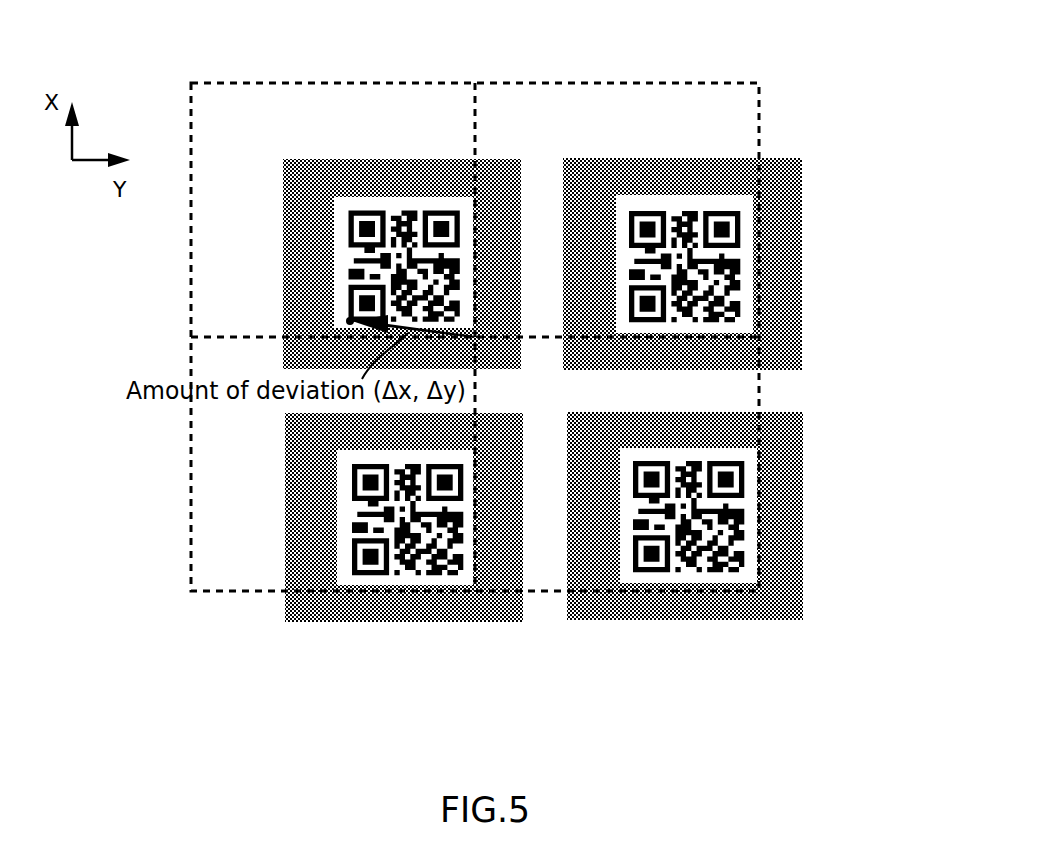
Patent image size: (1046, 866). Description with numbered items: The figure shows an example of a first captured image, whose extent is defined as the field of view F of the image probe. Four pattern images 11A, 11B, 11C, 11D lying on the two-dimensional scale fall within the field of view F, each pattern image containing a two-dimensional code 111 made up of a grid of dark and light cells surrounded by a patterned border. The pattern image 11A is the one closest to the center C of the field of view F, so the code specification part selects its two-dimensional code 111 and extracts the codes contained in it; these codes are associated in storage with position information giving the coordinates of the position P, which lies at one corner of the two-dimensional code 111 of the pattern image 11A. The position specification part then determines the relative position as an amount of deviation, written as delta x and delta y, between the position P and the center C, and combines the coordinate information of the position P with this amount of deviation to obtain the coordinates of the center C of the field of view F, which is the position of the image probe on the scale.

The pattern image 11A is at (286, 189).
The pattern image 11B is at (803, 190).
The pattern image 11C is at (287, 454).
The pattern image 11D is at (803, 455).
The two-dimensional code 111 is at (348, 268).
The position P is at (350, 321).
The center of the field of view C is at (477, 337).
The field of view F is at (719, 83).